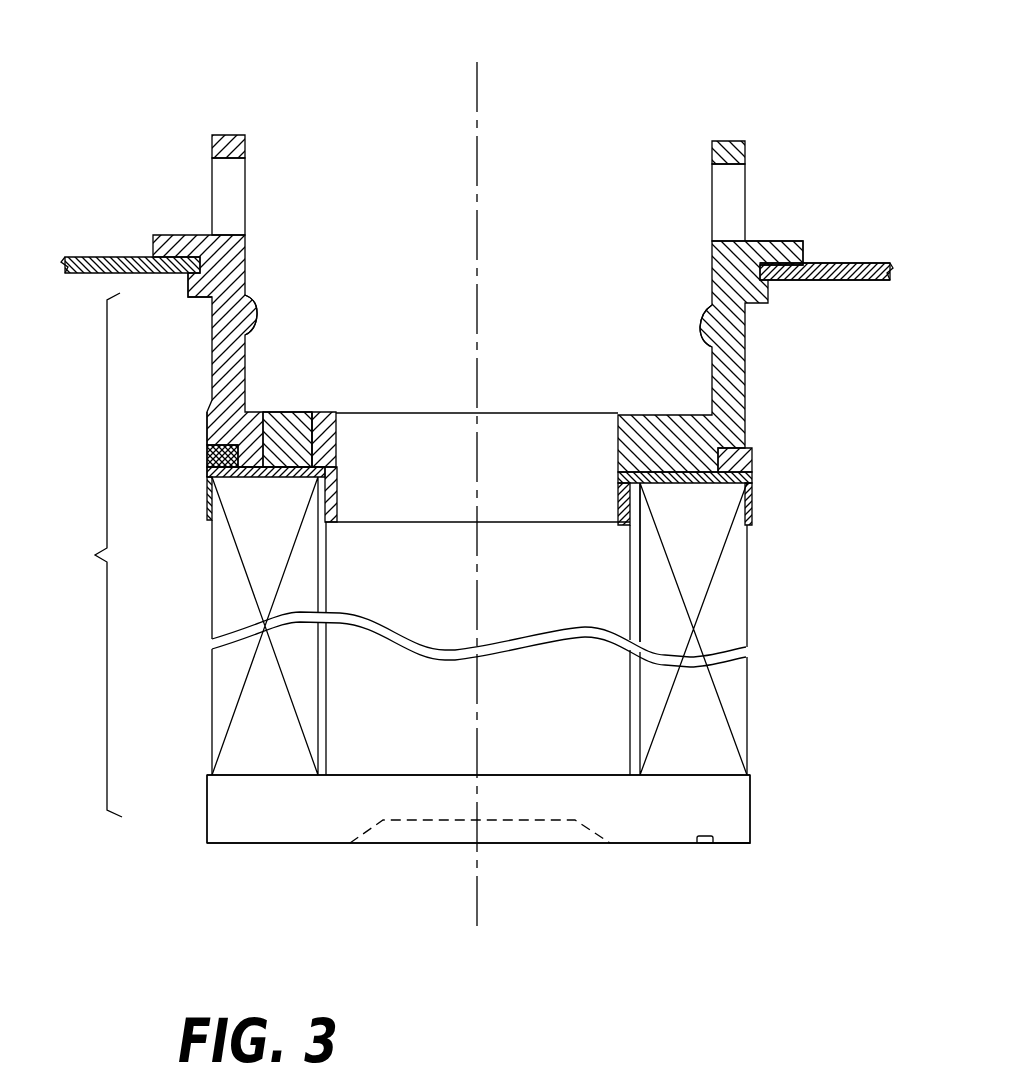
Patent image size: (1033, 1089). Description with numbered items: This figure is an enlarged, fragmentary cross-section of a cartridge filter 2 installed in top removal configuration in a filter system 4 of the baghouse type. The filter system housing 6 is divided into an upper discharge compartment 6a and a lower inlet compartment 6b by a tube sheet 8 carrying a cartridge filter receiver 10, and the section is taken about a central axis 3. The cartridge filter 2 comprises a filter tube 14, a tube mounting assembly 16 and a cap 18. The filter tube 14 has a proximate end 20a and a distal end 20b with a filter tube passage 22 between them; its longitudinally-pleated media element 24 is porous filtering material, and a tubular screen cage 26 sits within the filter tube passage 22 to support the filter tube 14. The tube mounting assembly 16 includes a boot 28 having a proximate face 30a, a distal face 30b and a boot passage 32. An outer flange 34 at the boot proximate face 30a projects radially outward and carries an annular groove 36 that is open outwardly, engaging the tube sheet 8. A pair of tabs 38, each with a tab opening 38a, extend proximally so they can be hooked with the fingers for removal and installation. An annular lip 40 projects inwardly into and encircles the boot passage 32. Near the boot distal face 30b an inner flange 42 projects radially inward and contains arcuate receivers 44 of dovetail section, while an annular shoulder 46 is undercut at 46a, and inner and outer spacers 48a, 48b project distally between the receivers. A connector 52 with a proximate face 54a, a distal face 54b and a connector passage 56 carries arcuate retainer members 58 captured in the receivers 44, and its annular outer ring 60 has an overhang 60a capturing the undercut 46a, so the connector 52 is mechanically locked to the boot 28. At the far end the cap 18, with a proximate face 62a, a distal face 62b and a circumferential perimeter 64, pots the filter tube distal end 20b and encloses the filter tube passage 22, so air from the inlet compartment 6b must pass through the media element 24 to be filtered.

The cartridge filter 2 is at (774, 242).
The central axis 3 is at (477, 82).
The filter system 4 is at (191, 274).
The housing 6 is at (845, 269).
The upper discharge compartment 6a is at (865, 262).
The lower inlet compartment 6b is at (830, 281).
The tube sheet 8 is at (107, 258).
The cartridge filter receiver 10 is at (223, 356).
The filter tube 14 is at (748, 768).
The tube mounting assembly 16 is at (234, 156).
The cap 18 is at (748, 845).
The filter tube proximate end 20a is at (209, 498).
The filter tube distal end 20b is at (248, 776).
The filter tube passage 22 is at (593, 740).
The longitudinally-pleated media element 24 is at (713, 757).
The cage 26 is at (329, 722).
The boot 28 is at (713, 143).
The boot proximate face 30a is at (723, 327).
The boot distal face 30b is at (227, 480).
The boot passage 32 is at (340, 460).
The outer flange 34 is at (803, 238).
The annular groove 36 is at (180, 279).
The tab 38 is at (246, 136).
The tab opening 38a is at (228, 162).
The annular lip 40 is at (254, 312).
The inner flange 42 is at (333, 412).
The arcuate receiver 44 is at (277, 412).
The annular shoulder 46 is at (207, 455).
The undercut 46a is at (207, 472).
The inner spacer 48a is at (618, 500).
The outer spacer 48b is at (707, 486).
The connector 52 is at (748, 527).
The connector proximate face 54a is at (310, 412).
The connector distal face 54b is at (337, 523).
The connector passage 56 is at (339, 505).
The arcuate retainer member 58 is at (297, 412).
The annular outer ring 60 is at (750, 448).
The overhang 60a is at (717, 447).
The cap proximate face 62a is at (435, 773).
The cap distal face 62b is at (332, 843).
The circumferential perimeter 64 is at (470, 812).